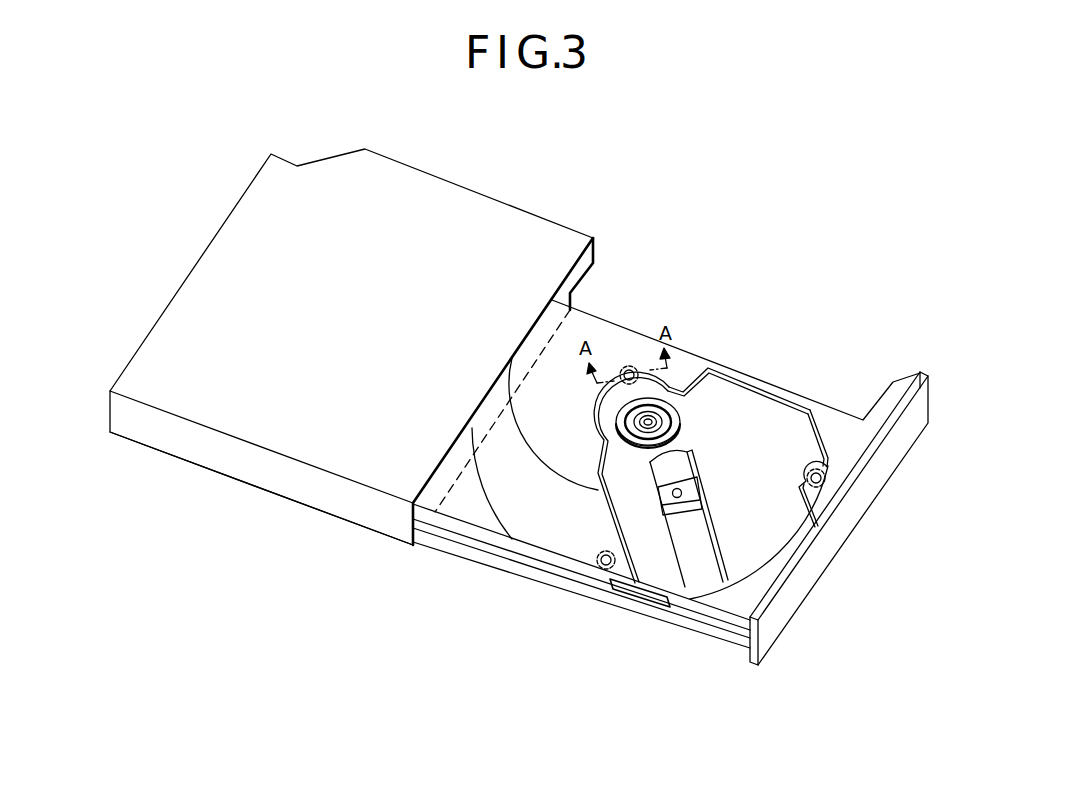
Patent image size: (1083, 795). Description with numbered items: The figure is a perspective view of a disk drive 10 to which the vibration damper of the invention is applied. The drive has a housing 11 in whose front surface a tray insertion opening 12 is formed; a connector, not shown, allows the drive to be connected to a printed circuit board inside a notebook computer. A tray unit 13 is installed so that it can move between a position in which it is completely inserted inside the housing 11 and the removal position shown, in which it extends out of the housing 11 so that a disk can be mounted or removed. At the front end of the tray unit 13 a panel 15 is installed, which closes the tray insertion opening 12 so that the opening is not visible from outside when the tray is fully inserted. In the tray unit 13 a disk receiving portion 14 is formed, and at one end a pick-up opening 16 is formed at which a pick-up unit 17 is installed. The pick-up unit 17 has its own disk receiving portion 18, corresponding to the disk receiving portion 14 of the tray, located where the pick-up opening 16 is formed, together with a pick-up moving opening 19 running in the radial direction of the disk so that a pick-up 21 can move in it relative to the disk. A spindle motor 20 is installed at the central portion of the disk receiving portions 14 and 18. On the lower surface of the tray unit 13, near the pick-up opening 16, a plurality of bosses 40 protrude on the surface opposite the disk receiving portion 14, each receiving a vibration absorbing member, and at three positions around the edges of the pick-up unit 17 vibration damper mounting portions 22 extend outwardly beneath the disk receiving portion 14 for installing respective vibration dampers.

The optical disc drive 10 is at (385, 622).
The housing 11 is at (297, 488).
The tray insertion opening 12 is at (590, 258).
The tray unit 13 is at (686, 647).
The disk receiving portion 14 is at (590, 335).
The panel 15 is at (922, 404).
The pick-up opening 16 is at (705, 365).
The pick-up unit 17 is at (733, 413).
The disk receiving portion 18 is at (780, 405).
The pick-up moving opening 19 is at (680, 545).
The spindle motor 20 is at (632, 428).
The pick-up 21 is at (668, 500).
The vibration damper mounting portions 22 is at (632, 368).
The bosses 40 is at (590, 545).